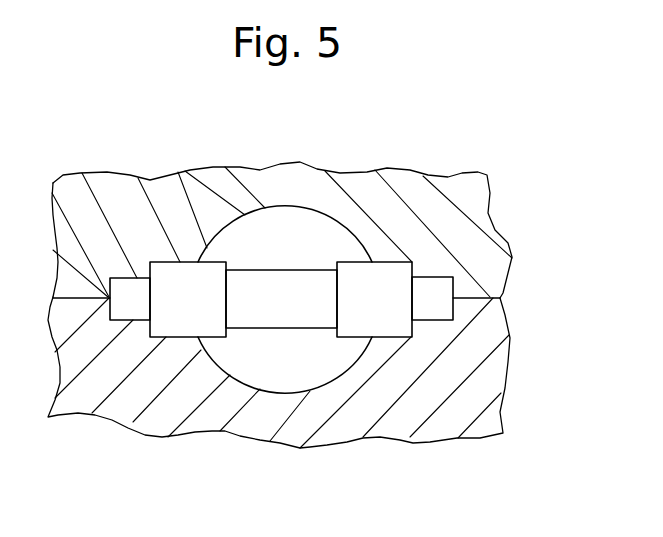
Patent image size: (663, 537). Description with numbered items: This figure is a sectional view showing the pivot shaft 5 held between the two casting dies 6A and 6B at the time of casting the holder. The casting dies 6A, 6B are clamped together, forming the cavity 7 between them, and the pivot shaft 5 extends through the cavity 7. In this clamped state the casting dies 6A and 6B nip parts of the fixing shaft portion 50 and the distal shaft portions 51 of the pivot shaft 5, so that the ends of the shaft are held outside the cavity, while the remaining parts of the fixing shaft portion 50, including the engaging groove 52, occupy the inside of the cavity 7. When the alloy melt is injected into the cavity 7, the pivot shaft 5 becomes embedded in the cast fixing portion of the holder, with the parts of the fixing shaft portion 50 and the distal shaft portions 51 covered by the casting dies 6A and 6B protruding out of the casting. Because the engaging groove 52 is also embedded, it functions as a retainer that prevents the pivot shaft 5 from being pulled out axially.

The pivot shaft 5 is at (455, 252).
The casting die 6A is at (477, 240).
The casting die 6B is at (480, 385).
The cavity 7 is at (281, 372).
The fixing shaft portion 50 is at (180, 278).
The distal shaft portion 51 is at (125, 287).
The engaging groove 52 is at (277, 285).